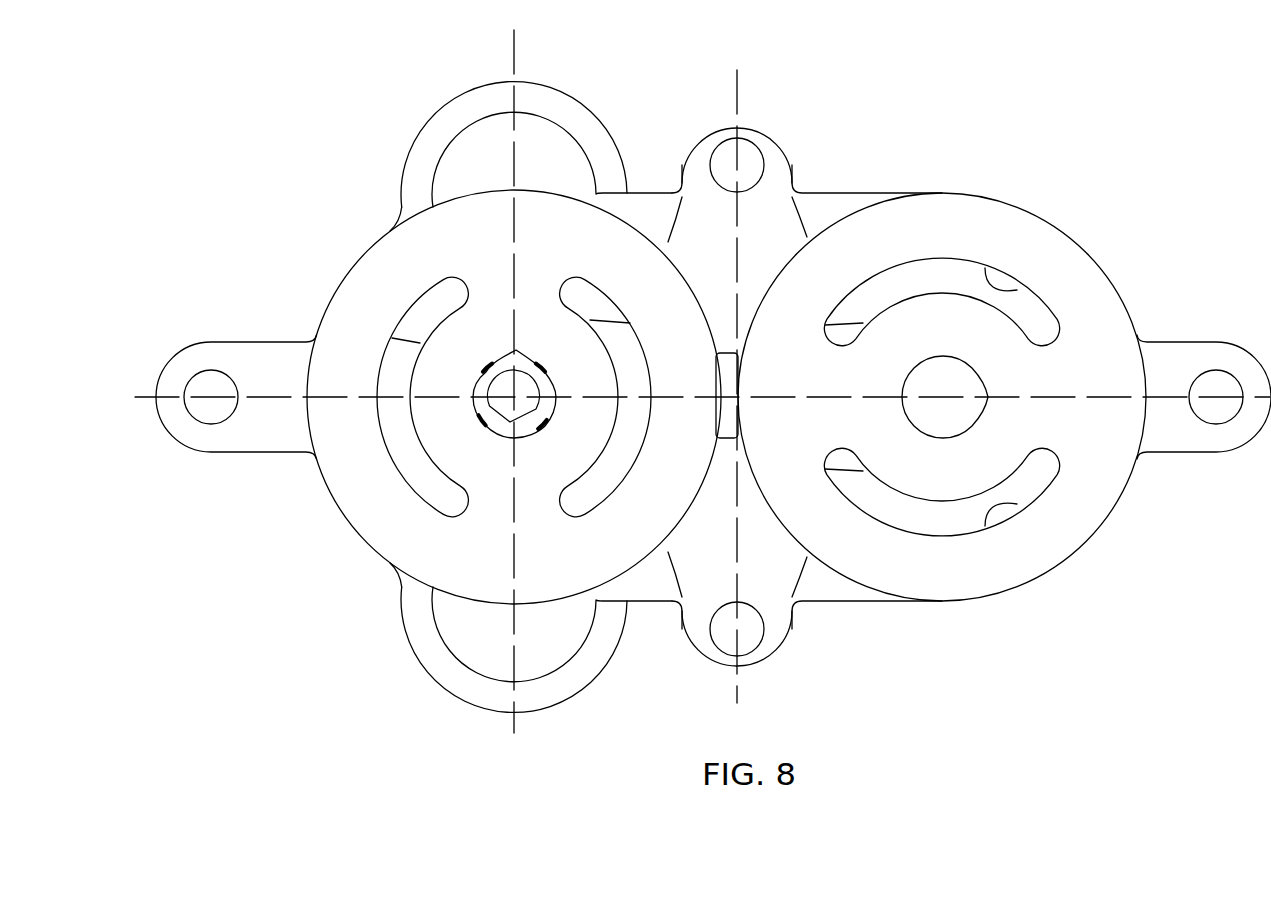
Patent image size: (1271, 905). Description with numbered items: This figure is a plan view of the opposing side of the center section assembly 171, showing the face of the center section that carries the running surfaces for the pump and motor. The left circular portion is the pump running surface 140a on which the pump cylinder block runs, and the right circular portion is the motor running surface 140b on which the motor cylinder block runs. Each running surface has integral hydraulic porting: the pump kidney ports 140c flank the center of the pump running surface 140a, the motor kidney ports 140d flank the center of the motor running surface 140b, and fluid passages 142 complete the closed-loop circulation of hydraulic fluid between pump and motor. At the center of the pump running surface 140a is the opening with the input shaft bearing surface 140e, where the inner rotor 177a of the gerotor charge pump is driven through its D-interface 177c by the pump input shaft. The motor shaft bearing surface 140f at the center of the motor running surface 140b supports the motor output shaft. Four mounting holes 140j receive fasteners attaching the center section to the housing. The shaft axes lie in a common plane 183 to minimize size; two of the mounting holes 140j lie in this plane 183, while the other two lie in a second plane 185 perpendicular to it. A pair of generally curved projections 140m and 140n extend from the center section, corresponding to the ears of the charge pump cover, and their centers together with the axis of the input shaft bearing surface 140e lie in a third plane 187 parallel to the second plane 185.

The center section assembly 171 is at (298, 85).
The curved projection 140m is at (468, 88).
The curved projection 140n is at (468, 703).
The third plane 187 is at (517, 58).
The second plane 185 is at (739, 88).
The common plane 183 is at (277, 392).
The mounting holes 140j is at (762, 183).
The pump running surface 140a is at (573, 538).
The motor running surface 140b is at (1081, 383).
The pump kidney ports 140c is at (392, 458).
The input shaft bearing surface 140e is at (493, 426).
The inner rotor 177a is at (527, 366).
The D-interface 177c is at (503, 407).
The fluid passages 142 is at (922, 277).
The motor kidney ports 140d is at (1017, 290).
The motor shaft bearing surface 140f is at (906, 410).